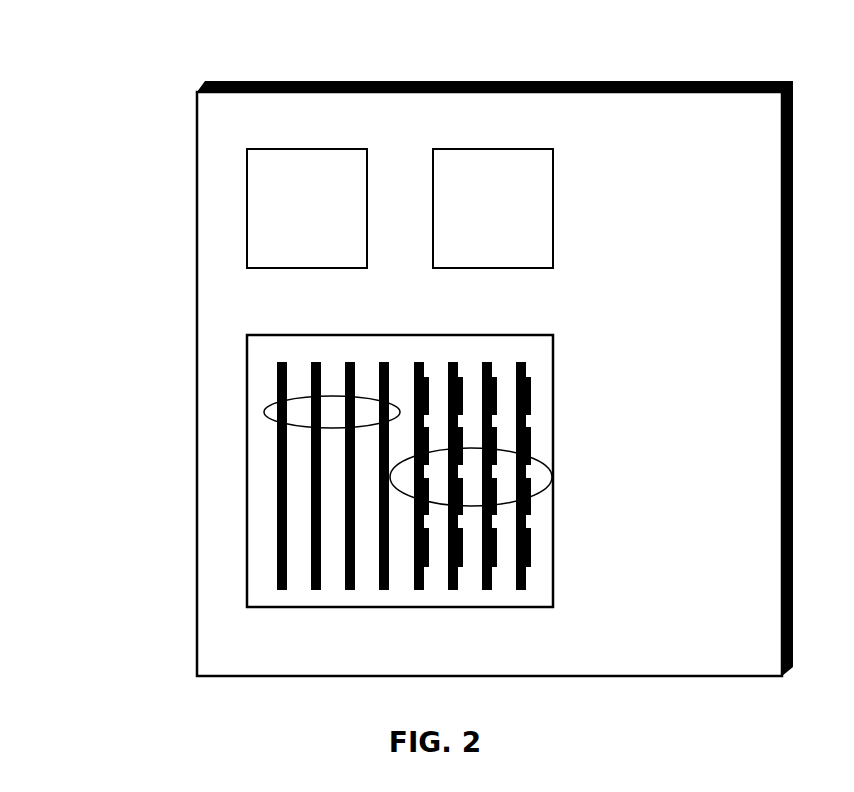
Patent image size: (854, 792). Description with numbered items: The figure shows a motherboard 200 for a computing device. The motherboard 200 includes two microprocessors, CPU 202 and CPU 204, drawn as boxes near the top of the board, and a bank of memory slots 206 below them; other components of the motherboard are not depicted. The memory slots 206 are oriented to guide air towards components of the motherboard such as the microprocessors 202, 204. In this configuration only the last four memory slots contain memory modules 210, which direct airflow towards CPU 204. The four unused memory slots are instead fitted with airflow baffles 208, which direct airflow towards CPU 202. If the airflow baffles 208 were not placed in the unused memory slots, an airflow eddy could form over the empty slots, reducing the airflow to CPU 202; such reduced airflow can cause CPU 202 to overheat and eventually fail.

The motherboard 200 is at (231, 81).
The microprocessor 202 is at (307, 208).
The microprocessor 204 is at (493, 208).
The memory slots 206 is at (485, 335).
The airflow baffles 208 is at (296, 400).
The memory modules 210 is at (530, 458).